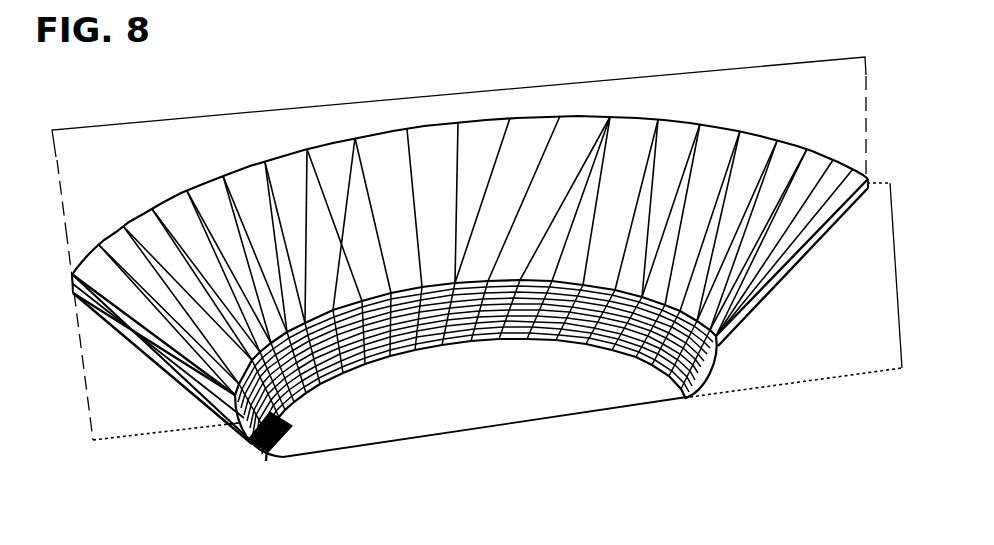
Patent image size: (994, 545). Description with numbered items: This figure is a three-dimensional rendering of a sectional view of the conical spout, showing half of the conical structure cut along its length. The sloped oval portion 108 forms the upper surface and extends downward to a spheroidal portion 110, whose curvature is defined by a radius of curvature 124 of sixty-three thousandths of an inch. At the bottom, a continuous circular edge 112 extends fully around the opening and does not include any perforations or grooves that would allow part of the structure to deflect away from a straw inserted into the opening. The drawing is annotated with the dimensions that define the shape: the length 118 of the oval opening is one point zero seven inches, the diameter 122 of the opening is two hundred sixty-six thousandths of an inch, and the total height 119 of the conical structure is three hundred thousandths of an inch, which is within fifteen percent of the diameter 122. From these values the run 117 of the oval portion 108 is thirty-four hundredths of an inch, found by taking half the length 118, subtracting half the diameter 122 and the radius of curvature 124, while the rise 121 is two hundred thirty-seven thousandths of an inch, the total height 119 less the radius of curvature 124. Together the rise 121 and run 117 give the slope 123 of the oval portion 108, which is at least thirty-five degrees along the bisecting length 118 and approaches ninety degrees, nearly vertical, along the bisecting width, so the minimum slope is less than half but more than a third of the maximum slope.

The oval portion 108 is at (745, 274).
The spheroidal portion 110 is at (718, 362).
The continuous circular edge 112 is at (420, 348).
The run 117 is at (155, 435).
The length 118 is at (410, 98).
The total height 119 is at (893, 252).
The rise 121 is at (82, 362).
The diameter 122 is at (400, 438).
The slope 123 is at (238, 422).
The radius of curvature 124 is at (257, 450).